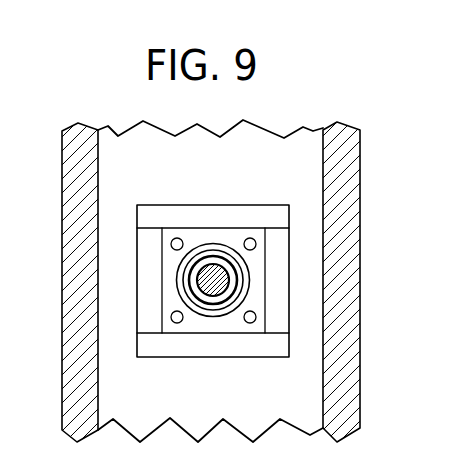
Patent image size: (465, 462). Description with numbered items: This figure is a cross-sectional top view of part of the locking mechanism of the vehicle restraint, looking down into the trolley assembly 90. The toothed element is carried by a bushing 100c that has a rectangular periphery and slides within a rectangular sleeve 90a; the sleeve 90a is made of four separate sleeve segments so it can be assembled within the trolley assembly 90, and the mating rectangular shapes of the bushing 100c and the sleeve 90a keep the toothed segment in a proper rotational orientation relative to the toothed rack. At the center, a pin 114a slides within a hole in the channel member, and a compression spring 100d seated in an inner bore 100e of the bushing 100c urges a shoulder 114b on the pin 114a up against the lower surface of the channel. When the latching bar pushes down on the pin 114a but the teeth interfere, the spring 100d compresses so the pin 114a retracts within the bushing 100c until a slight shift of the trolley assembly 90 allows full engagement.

The trolley assembly 90 is at (62, 206).
The rectangular sleeve 90a is at (257, 205).
The bushing 100c is at (183, 228).
The compression spring 100d is at (240, 283).
The inner bore 100e is at (210, 300).
The pin 114a is at (218, 264).
The shoulder 114b is at (212, 252).